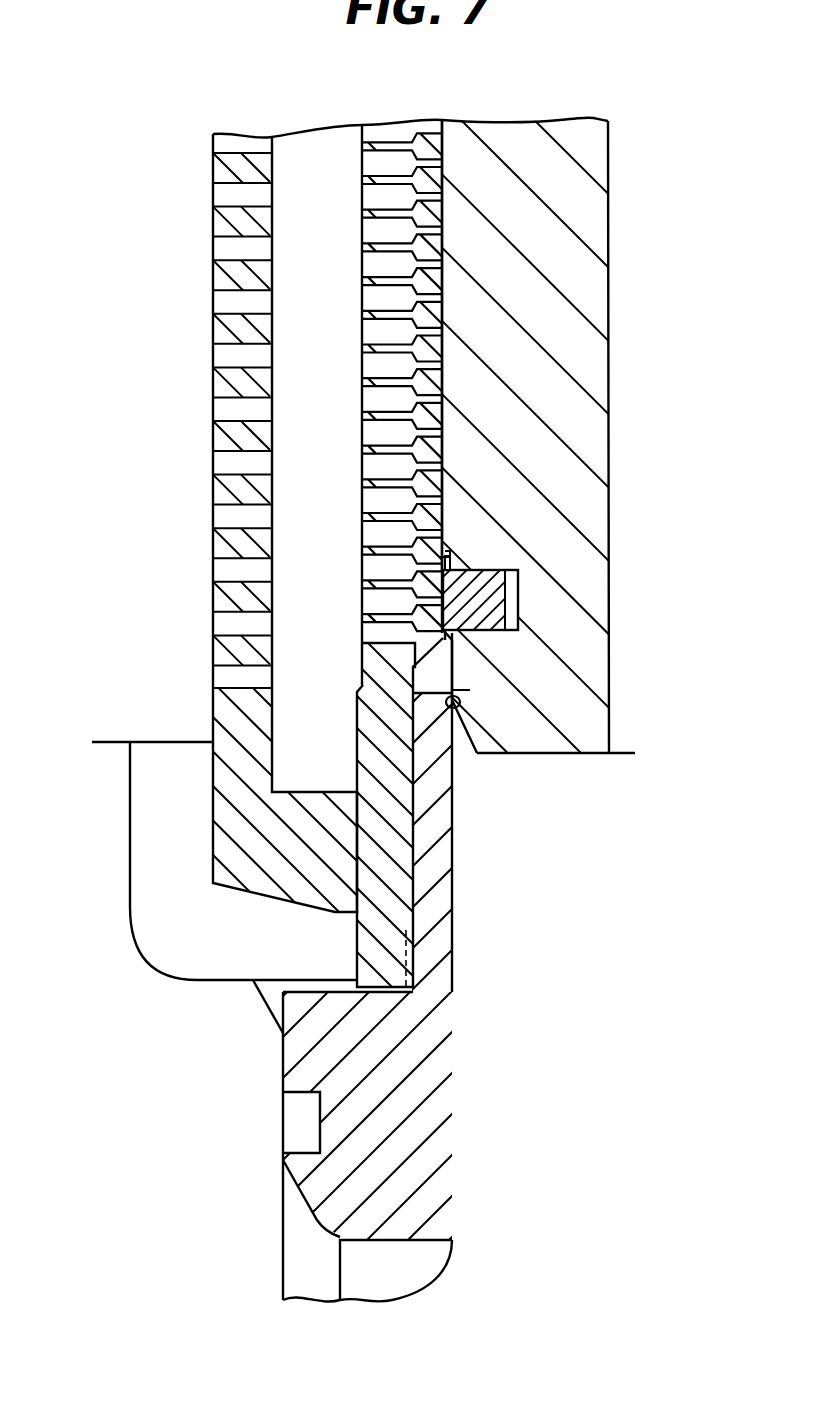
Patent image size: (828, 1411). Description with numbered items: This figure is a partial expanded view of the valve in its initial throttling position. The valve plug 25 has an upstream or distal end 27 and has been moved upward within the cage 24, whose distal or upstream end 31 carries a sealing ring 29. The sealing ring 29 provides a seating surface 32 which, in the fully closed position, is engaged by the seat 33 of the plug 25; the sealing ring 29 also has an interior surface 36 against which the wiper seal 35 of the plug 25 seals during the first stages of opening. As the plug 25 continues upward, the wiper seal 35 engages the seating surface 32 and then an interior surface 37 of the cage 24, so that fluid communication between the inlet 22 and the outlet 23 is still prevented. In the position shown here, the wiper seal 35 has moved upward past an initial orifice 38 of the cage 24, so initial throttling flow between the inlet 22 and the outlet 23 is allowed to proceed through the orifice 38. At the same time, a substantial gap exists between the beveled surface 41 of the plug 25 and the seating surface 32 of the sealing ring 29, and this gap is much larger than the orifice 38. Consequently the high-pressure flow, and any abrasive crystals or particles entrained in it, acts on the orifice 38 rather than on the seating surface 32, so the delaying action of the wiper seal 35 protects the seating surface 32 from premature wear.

The inlet 22 is at (632, 928).
The outlet 23 is at (80, 480).
The cage 24 is at (352, 347).
The valve plug 25 is at (614, 428).
The upstream or distal end 27 is at (540, 757).
The sealing ring 29 is at (428, 1097).
The distal or upstream end of the cage 31 is at (373, 931).
The seating surface 32 is at (462, 709).
The seat 33 is at (453, 553).
The wiper seal 35 is at (518, 592).
The interior surface 36 is at (453, 938).
The interior surface of the cage 37 is at (458, 644).
The initial orifice 38 is at (422, 632).
The beveled surface 41 is at (457, 693).